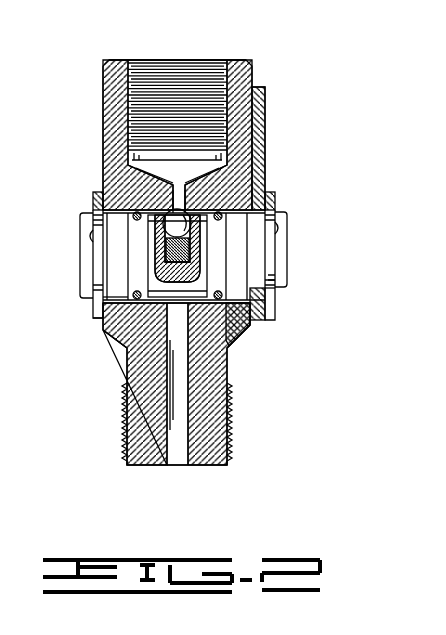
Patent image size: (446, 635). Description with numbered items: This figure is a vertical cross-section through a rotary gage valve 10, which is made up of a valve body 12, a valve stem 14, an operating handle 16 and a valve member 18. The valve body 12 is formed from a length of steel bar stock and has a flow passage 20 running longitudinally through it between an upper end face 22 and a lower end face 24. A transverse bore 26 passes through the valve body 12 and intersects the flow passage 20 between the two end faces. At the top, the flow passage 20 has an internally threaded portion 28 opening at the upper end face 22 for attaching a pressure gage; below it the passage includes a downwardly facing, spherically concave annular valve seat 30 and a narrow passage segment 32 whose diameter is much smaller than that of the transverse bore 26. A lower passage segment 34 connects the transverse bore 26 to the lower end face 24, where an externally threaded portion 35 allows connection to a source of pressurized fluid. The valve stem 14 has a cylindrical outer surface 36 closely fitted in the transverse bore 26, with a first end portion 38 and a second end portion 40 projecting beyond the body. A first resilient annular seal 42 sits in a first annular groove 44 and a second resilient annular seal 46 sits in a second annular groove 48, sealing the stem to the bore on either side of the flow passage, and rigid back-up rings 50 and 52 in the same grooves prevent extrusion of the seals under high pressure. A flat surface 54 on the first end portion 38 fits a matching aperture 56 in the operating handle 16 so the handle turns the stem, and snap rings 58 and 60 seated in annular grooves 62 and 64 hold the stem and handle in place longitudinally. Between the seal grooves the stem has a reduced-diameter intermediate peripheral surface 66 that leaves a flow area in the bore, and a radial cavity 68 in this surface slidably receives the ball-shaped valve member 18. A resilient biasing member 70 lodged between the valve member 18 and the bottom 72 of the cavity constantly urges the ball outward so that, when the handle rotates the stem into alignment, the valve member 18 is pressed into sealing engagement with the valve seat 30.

The rotary gage valve 10 is at (290, 72).
The valve body 12 is at (243, 62).
The valve stem 14 is at (289, 252).
The operating handle 16 is at (263, 136).
The valve member 18 is at (165, 238).
The flow passage 20 is at (128, 368).
The upper end face 22 is at (125, 62).
The lower end face 24 is at (158, 468).
The transverse bore 26 is at (108, 218).
The internally threaded portion 28 is at (155, 70).
The valve seat 30 is at (262, 165).
The passage segment 32 is at (165, 217).
The lower passage segment 34 is at (162, 398).
The externally threaded portion 35 is at (227, 414).
The cylindrical outer surface 36 is at (267, 183).
The first end portion 38 is at (281, 286).
The second end portion 40 is at (107, 297).
The first resilient annular seal 42 is at (240, 345).
The first annular groove 44 is at (266, 319).
The second resilient annular seal 46 is at (125, 349).
The second annular groove 48 is at (102, 314).
The first back-up ring 50 is at (243, 333).
The second back-up ring 52 is at (103, 328).
The flat surface 54 is at (266, 304).
The aperture 56 is at (258, 300).
The snap ring 58 is at (276, 203).
The snap ring 60 is at (92, 198).
The annular groove 62 is at (287, 229).
The annular groove 64 is at (162, 220).
The intermediate peripheral surface 66 is at (136, 213).
The cavity 68 is at (150, 262).
The biasing member 70 is at (201, 231).
The bottom 72 is at (190, 257).